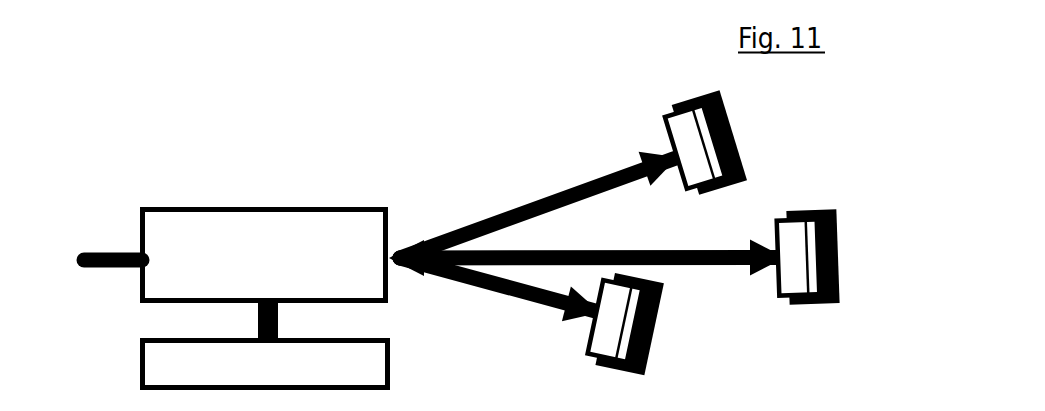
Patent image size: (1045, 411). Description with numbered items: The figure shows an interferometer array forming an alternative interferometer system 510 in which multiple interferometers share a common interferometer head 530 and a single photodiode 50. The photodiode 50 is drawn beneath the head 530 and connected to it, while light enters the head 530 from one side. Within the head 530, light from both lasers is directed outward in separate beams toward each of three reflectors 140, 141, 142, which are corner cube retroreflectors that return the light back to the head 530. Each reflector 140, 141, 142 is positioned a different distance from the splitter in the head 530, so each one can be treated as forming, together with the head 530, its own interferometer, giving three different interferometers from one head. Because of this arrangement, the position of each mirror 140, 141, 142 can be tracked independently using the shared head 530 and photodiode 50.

The interferometer system 510 is at (108, 332).
The interferometer head 530 is at (264, 255).
The photodiode 50 is at (265, 364).
The reflector 140 is at (725, 143).
The reflector 141 is at (832, 257).
The reflector 142 is at (648, 323).